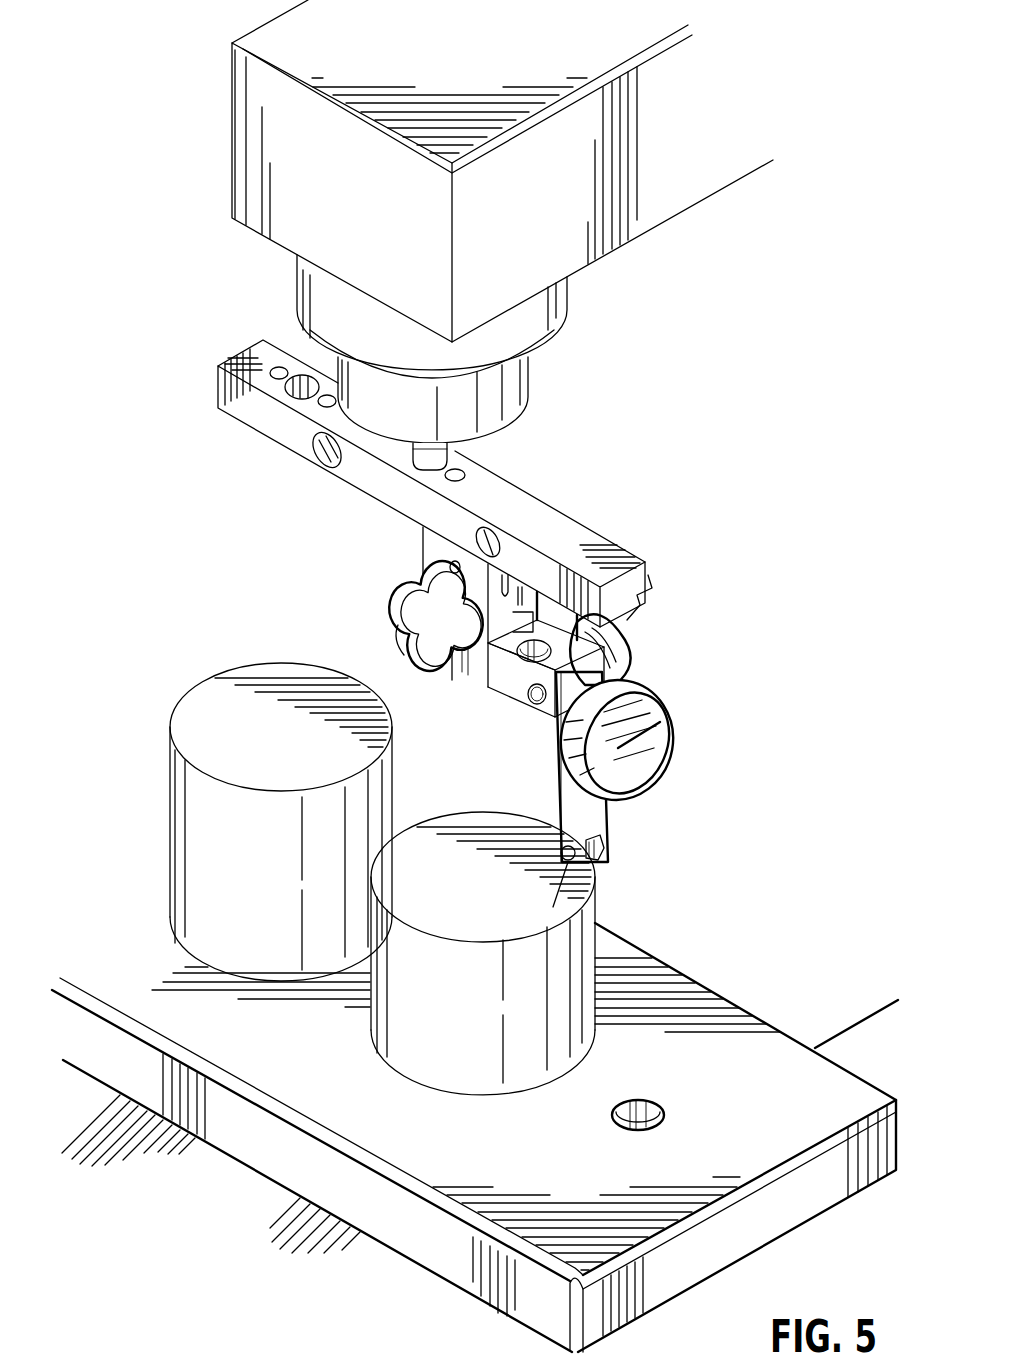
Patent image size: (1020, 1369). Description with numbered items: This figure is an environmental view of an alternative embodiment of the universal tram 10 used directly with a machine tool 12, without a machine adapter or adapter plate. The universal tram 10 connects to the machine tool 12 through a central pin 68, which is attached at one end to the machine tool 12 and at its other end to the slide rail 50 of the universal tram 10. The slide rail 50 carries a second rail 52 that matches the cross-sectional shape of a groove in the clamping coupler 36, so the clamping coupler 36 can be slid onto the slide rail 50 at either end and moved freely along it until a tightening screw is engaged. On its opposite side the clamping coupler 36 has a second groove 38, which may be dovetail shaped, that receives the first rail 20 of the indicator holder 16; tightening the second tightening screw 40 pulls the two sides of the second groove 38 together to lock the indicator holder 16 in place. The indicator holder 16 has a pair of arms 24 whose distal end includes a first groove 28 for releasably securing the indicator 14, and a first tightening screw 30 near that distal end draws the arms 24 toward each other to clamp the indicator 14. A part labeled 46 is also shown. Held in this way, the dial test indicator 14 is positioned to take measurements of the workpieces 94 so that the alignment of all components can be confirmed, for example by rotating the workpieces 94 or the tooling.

The universal tram 10 is at (653, 535).
The machine tool 12 is at (224, 108).
The indicator 14 is at (636, 799).
The indicator holder 16 is at (503, 697).
The first rail 20 is at (523, 618).
The arms 24 is at (547, 710).
The first groove 28 is at (590, 648).
The first tightening screw 30 is at (620, 666).
The clamping coupler 36 is at (416, 548).
The second groove 38 is at (473, 668).
The second tightening screw 40 is at (413, 630).
The clamp knob 46 is at (396, 618).
The slide rail 50 is at (238, 350).
The second rail 52 is at (636, 598).
The central pin 68 is at (470, 465).
The workpieces 94 is at (289, 759).